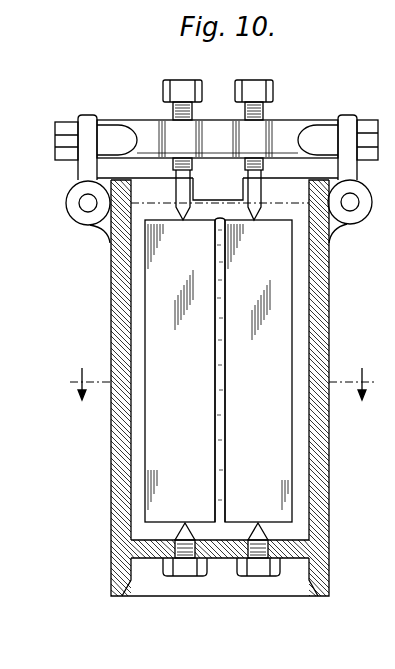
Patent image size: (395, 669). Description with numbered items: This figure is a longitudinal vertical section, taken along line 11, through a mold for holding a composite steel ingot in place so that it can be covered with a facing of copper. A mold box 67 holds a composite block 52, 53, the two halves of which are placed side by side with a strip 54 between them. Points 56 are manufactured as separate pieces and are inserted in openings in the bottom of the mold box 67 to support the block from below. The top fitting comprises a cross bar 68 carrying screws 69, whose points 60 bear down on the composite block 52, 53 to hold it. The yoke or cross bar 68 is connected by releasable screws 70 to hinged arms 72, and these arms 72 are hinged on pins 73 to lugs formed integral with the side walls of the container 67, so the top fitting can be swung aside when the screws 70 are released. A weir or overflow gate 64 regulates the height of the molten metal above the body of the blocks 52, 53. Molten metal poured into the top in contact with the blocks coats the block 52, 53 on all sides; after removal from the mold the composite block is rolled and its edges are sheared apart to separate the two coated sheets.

The section line 11- 11 is at (223, 374).
The composite block 52 is at (157, 445).
The composite block 53 is at (280, 422).
The insulating separator strip 54 is at (222, 456).
The points 56 is at (185, 523).
The points 60 is at (178, 200).
The weir or overflow gate 64 is at (212, 195).
The mold box 67 is at (110, 300).
The cross bar 68 is at (147, 125).
The screws 69 is at (177, 82).
The releasable screws 70 is at (63, 127).
The hinged arms 72 is at (82, 172).
The pins 73 is at (83, 202).